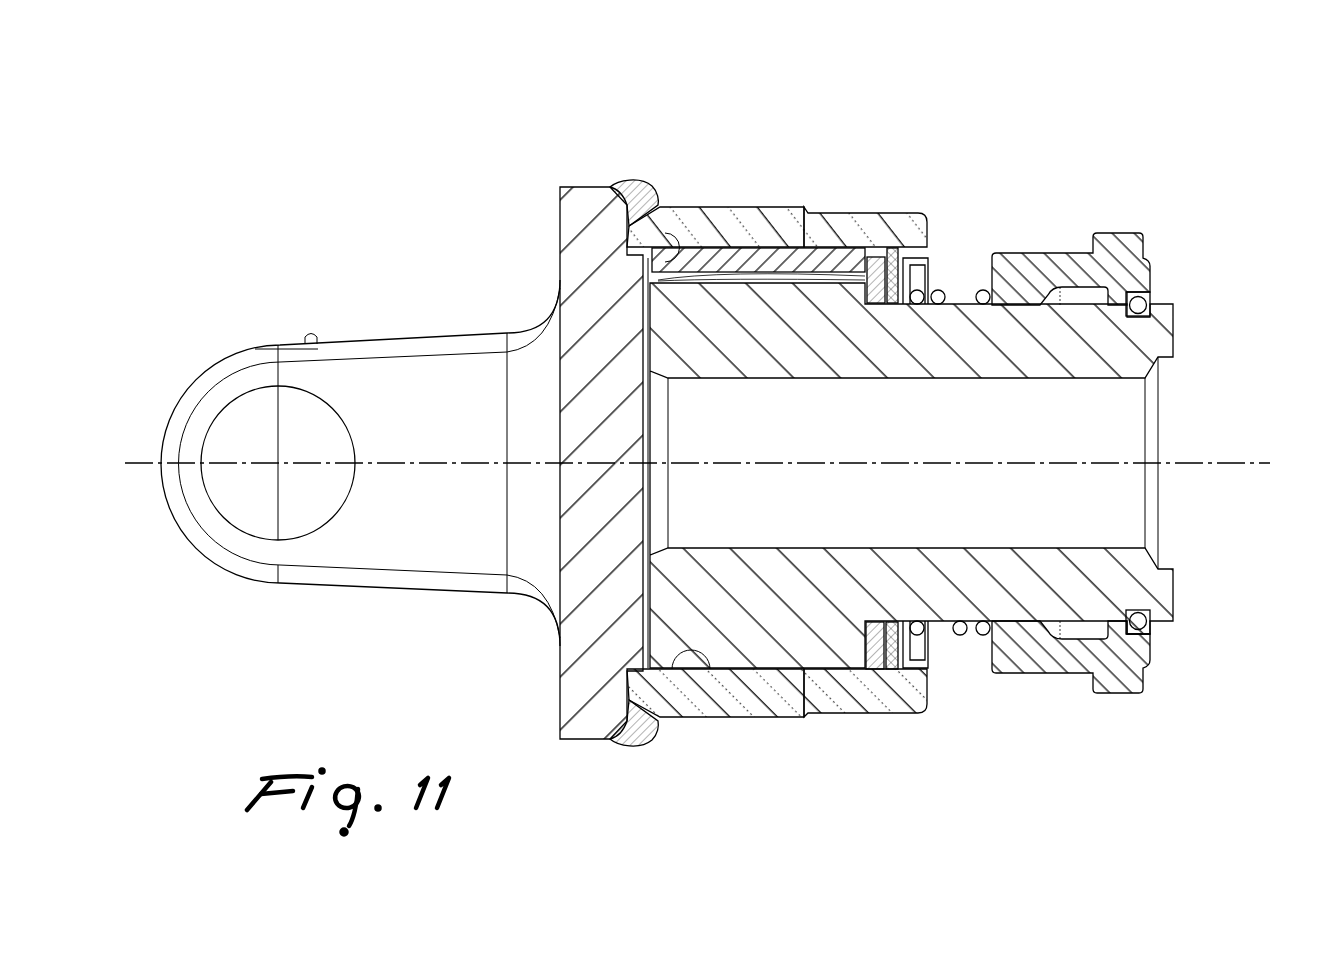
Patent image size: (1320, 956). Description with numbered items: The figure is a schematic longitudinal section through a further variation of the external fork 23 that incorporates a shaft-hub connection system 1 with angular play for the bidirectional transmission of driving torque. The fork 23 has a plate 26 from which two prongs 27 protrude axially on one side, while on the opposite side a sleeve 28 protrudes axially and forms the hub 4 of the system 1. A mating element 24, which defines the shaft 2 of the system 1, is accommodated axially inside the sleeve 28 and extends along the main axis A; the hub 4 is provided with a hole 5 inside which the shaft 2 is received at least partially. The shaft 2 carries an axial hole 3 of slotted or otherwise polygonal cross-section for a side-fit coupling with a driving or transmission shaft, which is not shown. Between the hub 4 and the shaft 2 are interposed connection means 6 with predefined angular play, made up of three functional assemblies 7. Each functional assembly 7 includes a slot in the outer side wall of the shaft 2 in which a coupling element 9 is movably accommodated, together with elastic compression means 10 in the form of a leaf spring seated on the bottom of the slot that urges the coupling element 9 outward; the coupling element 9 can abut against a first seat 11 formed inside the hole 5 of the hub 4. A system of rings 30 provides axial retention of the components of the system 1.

The shaft-hub connection system 1 is at (846, 140).
The shaft 2 is at (975, 730).
The axial hole 3 is at (1085, 545).
The hub 4 is at (733, 112).
The hole 5 is at (707, 660).
The connection means 6 is at (854, 220).
The functional assembly 7 is at (798, 241).
The coupling element 9 is at (750, 251).
The elastic compression means 10 is at (773, 283).
The first seat 11 is at (680, 226).
The external fork 23 is at (630, 173).
The mating element 24 is at (944, 624).
The plate 26 is at (585, 200).
The prongs 27 is at (388, 375).
The sleeve 28 is at (730, 209).
The system of rings 30 is at (929, 260).
The main axis A is at (1242, 432).